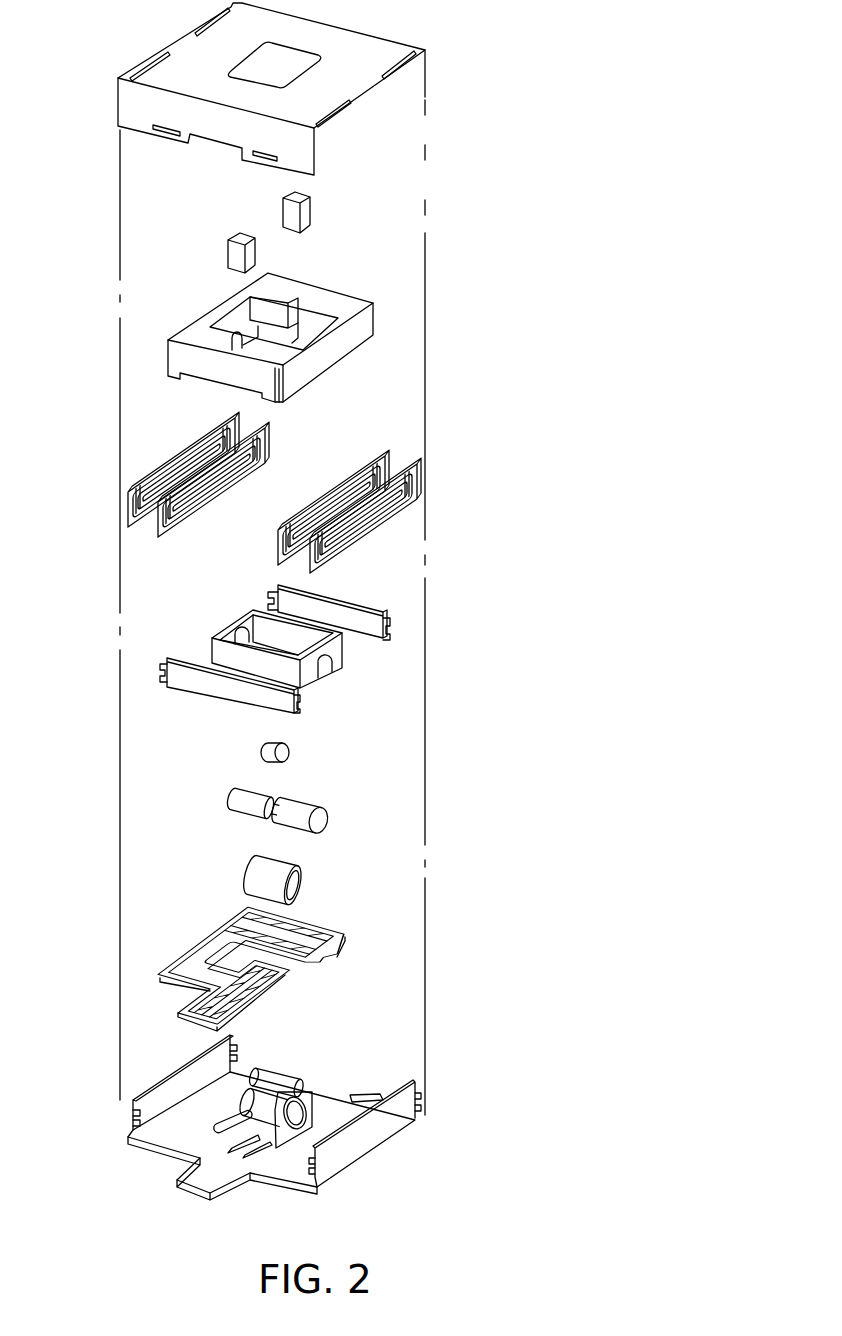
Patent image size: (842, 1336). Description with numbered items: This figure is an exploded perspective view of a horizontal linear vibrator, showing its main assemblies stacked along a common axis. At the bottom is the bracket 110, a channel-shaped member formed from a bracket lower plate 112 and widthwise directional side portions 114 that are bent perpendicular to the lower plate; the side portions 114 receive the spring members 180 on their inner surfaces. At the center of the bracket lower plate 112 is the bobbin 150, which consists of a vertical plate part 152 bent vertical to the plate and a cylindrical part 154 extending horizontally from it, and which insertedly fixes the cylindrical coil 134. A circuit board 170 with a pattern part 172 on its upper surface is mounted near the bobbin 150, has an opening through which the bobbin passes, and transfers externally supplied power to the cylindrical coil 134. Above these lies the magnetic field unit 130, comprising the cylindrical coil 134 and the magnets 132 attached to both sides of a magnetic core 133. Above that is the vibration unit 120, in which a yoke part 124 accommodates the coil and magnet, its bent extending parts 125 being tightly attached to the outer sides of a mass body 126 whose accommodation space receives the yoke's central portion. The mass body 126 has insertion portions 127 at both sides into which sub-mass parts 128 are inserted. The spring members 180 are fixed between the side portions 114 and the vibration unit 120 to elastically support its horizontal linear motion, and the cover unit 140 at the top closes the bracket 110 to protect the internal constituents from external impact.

The bracket 110 is at (472, 1167).
The bracket lower plate 112 is at (290, 1175).
The widthwise directional side portions 114 is at (350, 1160).
The vibration unit 120 is at (527, 365).
The yoke part 124 is at (337, 644).
The extending parts 125 is at (357, 608).
The mass body 126 is at (340, 350).
The insertion portions 127 is at (298, 300).
The sub-mass parts 128 is at (254, 252).
The magnetic field unit 130 is at (535, 762).
The magnet 132 is at (317, 826).
The magnetic core 133 is at (290, 755).
The cylindrical coil 134 is at (297, 887).
The cover unit 140 is at (367, 42).
The bobbin 150 is at (533, 1030).
The vertical plate part 152 is at (320, 1092).
The cylindrical part 154 is at (268, 1098).
The circuit board 170 is at (325, 969).
The pattern part 172 is at (235, 966).
The spring members 180 is at (277, 543).